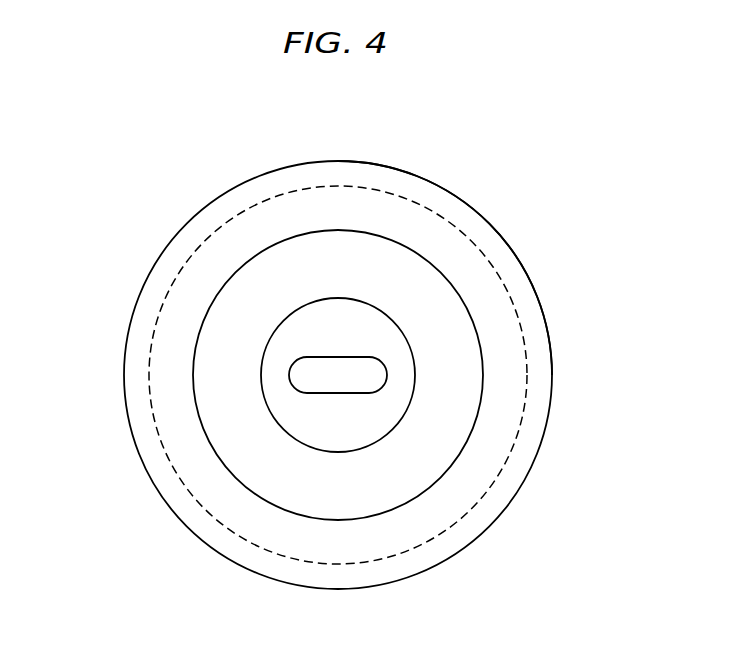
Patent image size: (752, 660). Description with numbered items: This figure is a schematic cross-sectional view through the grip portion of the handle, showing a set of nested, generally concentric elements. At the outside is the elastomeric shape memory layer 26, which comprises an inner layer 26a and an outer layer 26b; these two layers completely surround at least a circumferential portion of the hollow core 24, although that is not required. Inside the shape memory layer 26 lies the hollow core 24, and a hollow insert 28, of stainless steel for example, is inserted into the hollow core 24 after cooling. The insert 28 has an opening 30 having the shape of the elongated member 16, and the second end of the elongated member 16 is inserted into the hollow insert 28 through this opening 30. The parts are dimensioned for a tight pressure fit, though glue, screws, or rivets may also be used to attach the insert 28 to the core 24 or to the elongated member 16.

The elongated member 16 is at (310, 377).
The hollow core 24 is at (472, 362).
The elastomeric shape memory layer 26 is at (484, 215).
The inner layer 26a is at (213, 266).
The outer layer 26b is at (240, 203).
The hollow insert 28 is at (390, 407).
The opening 30 is at (357, 393).